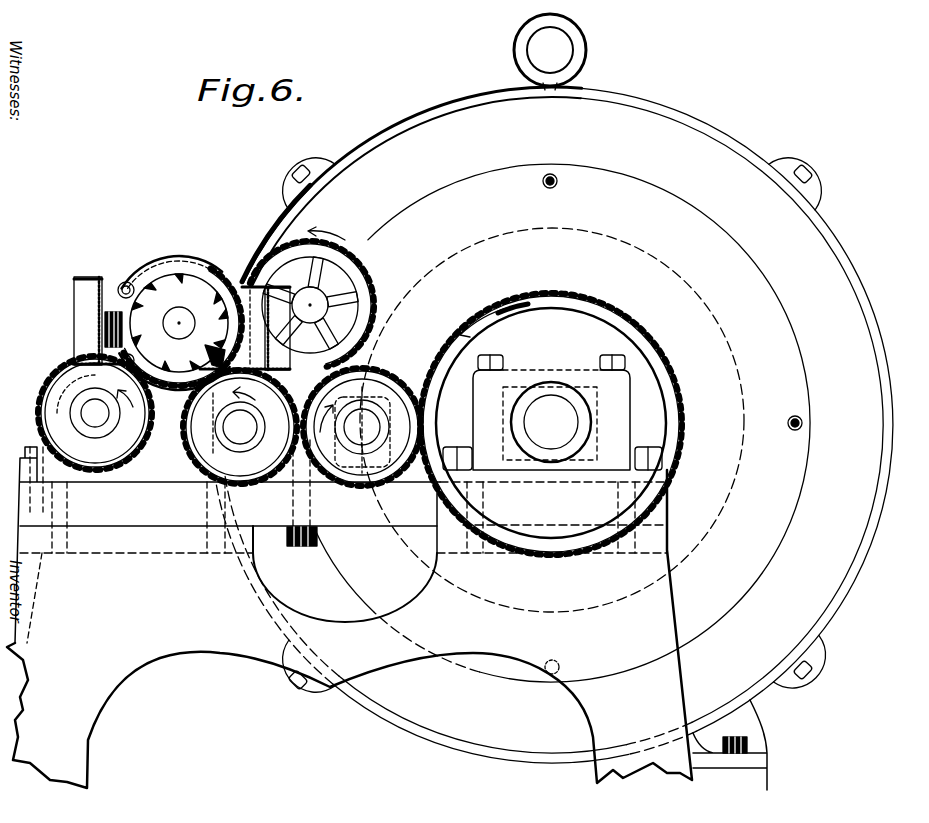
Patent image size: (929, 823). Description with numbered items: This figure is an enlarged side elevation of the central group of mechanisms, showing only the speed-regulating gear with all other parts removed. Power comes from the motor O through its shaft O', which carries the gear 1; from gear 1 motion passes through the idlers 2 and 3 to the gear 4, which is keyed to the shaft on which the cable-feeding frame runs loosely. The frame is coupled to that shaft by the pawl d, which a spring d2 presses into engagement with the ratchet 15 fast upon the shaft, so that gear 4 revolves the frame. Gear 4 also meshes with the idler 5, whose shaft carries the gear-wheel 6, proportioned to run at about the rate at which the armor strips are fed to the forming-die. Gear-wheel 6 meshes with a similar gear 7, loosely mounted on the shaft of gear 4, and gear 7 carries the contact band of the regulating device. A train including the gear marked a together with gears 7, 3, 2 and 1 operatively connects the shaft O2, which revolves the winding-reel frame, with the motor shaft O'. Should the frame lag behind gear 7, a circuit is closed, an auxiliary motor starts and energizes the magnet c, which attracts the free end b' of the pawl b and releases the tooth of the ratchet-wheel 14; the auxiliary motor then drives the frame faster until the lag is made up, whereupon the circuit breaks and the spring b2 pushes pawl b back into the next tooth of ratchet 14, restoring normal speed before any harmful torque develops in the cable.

The gear 1 is at (582, 302).
The idler 2 is at (372, 380).
The idler 3 is at (263, 462).
The gear 4 is at (77, 413).
The idler 5 is at (325, 265).
The gear-wheel 6 is at (364, 282).
The gear 7 is at (236, 263).
The ratchet-wheel 14 is at (179, 323).
The ratchet 15 is at (168, 278).
The gear a is at (73, 374).
The pawl b is at (211, 344).
The free end of pawl b' is at (92, 347).
The spring b2 is at (150, 378).
The magnet c is at (100, 322).
The pawl d is at (174, 253).
The spring d2 is at (126, 282).
The motor O is at (554, 388).
The motor shaft O' is at (551, 422).
The shaft O2 is at (95, 413).